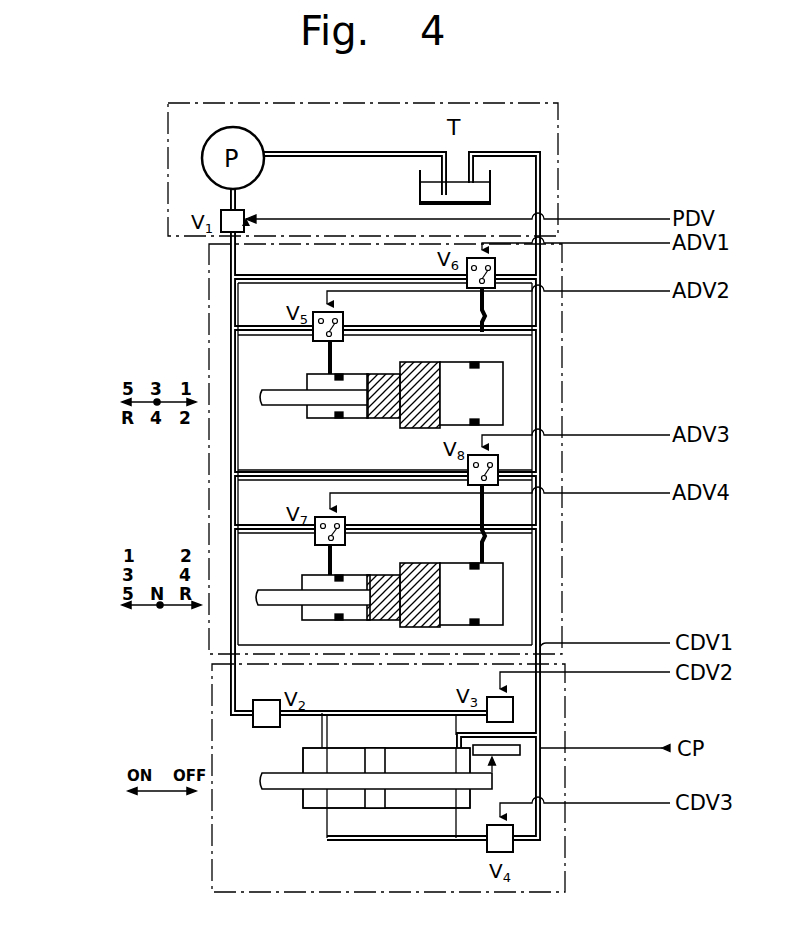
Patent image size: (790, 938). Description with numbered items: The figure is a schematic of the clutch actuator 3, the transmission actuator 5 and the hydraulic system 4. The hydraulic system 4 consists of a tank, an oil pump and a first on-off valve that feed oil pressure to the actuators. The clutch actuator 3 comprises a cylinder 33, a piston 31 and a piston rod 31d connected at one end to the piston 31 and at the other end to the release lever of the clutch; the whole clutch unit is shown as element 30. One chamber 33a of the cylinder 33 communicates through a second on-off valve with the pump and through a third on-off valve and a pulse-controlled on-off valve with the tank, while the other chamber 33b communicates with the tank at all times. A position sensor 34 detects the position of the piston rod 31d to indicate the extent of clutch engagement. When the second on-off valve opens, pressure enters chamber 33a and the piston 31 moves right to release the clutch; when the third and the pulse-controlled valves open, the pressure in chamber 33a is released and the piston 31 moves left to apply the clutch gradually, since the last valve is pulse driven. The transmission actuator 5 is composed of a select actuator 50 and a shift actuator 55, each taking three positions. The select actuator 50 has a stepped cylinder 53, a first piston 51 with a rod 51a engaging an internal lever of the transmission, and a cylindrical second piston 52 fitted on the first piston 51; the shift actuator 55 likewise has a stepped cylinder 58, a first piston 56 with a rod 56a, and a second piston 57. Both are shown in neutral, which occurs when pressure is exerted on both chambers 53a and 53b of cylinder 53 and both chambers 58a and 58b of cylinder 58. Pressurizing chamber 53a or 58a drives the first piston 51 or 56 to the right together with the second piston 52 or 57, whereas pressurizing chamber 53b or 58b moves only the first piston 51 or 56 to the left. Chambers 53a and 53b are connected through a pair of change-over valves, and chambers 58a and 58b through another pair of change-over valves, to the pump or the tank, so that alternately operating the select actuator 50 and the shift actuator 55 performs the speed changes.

The clutch actuator 3 is at (212, 880).
The hydraulic system 4 is at (558, 127).
The transmission actuator 5 is at (209, 285).
The clutch cylinder 30 is at (389, 798).
The piston 31 is at (375, 808).
The piston rod 31d is at (280, 775).
The cylinder 33 is at (405, 753).
The chamber 33a is at (318, 808).
The chamber 33b is at (458, 808).
The position sensor 34 is at (517, 757).
The select actuator 50 is at (389, 401).
The first piston 51 is at (384, 420).
The rod 51a is at (278, 392).
The second piston 52 is at (422, 428).
The stepped cylinder 53 is at (370, 374).
The chamber 53a is at (338, 418).
The chamber 53b is at (503, 372).
The shift actuator 55 is at (388, 590).
The first piston 56 is at (395, 620).
The rod 56a is at (278, 592).
The second piston 57 is at (425, 563).
The stepped cylinder 58 is at (372, 575).
The chamber 58a is at (338, 620).
The chamber 58b is at (503, 575).